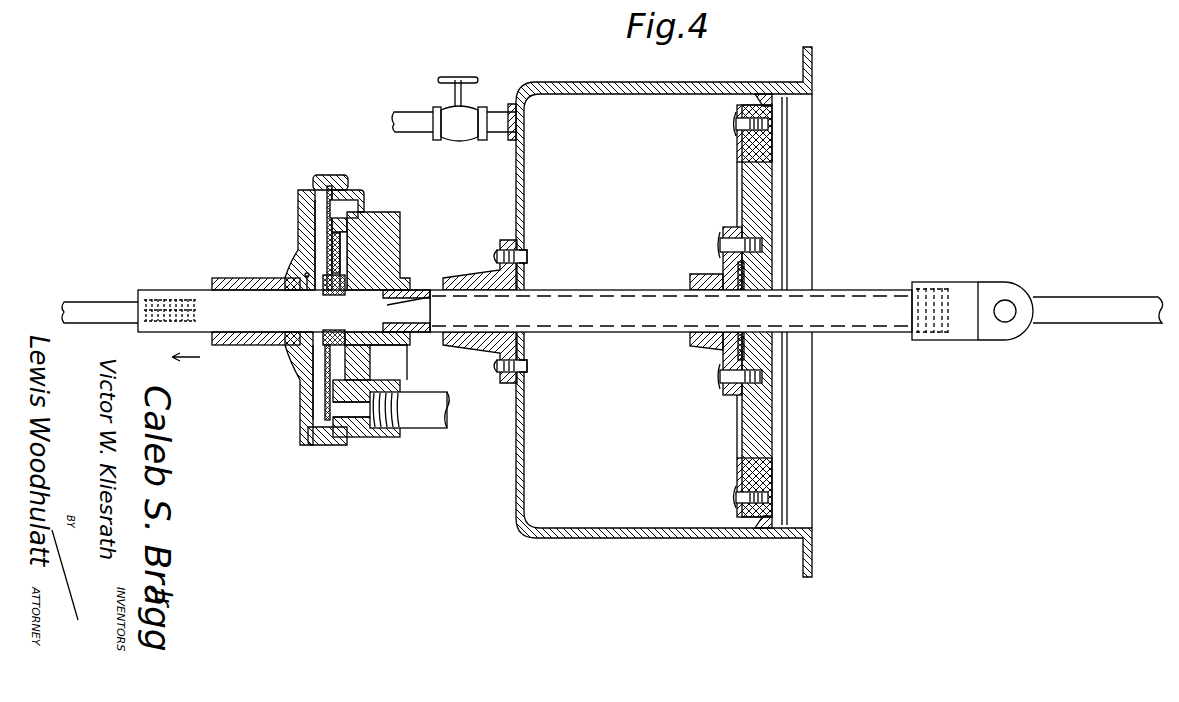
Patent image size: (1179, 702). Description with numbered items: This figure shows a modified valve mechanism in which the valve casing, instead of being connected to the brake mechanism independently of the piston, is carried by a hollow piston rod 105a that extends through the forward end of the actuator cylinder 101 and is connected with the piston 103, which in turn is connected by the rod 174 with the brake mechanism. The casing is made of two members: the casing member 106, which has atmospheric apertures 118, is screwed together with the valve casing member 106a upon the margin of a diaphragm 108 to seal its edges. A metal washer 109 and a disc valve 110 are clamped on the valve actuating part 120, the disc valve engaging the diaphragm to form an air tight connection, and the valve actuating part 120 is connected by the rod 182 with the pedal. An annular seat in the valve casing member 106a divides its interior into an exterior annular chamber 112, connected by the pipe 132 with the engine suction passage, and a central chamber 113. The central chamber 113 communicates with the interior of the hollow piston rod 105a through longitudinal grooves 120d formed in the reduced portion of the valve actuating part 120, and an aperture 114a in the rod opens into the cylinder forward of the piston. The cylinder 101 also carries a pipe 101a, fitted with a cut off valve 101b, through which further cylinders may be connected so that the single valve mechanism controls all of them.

The actuator cylinder 101 is at (707, 84).
The pipe 101a is at (405, 121).
The cut off valve 101b is at (466, 128).
The piston 103 is at (753, 190).
The hollow piston rod 105a is at (618, 334).
The casing member 106 is at (311, 186).
The valve casing member 106a is at (366, 207).
The diaphragm 108 is at (327, 258).
The metal washer 109 is at (292, 348).
The disc valve 110 is at (395, 227).
The annular chamber 112 is at (357, 410).
The central chamber 113 is at (345, 371).
The aperture 114a is at (663, 300).
The apertures 118 is at (310, 378).
The valve actuating part 120 is at (165, 296).
The longitudinal grooves 120d is at (413, 292).
The pipe 132 is at (427, 424).
The rod 174 is at (1097, 306).
The rod 182 is at (131, 331).